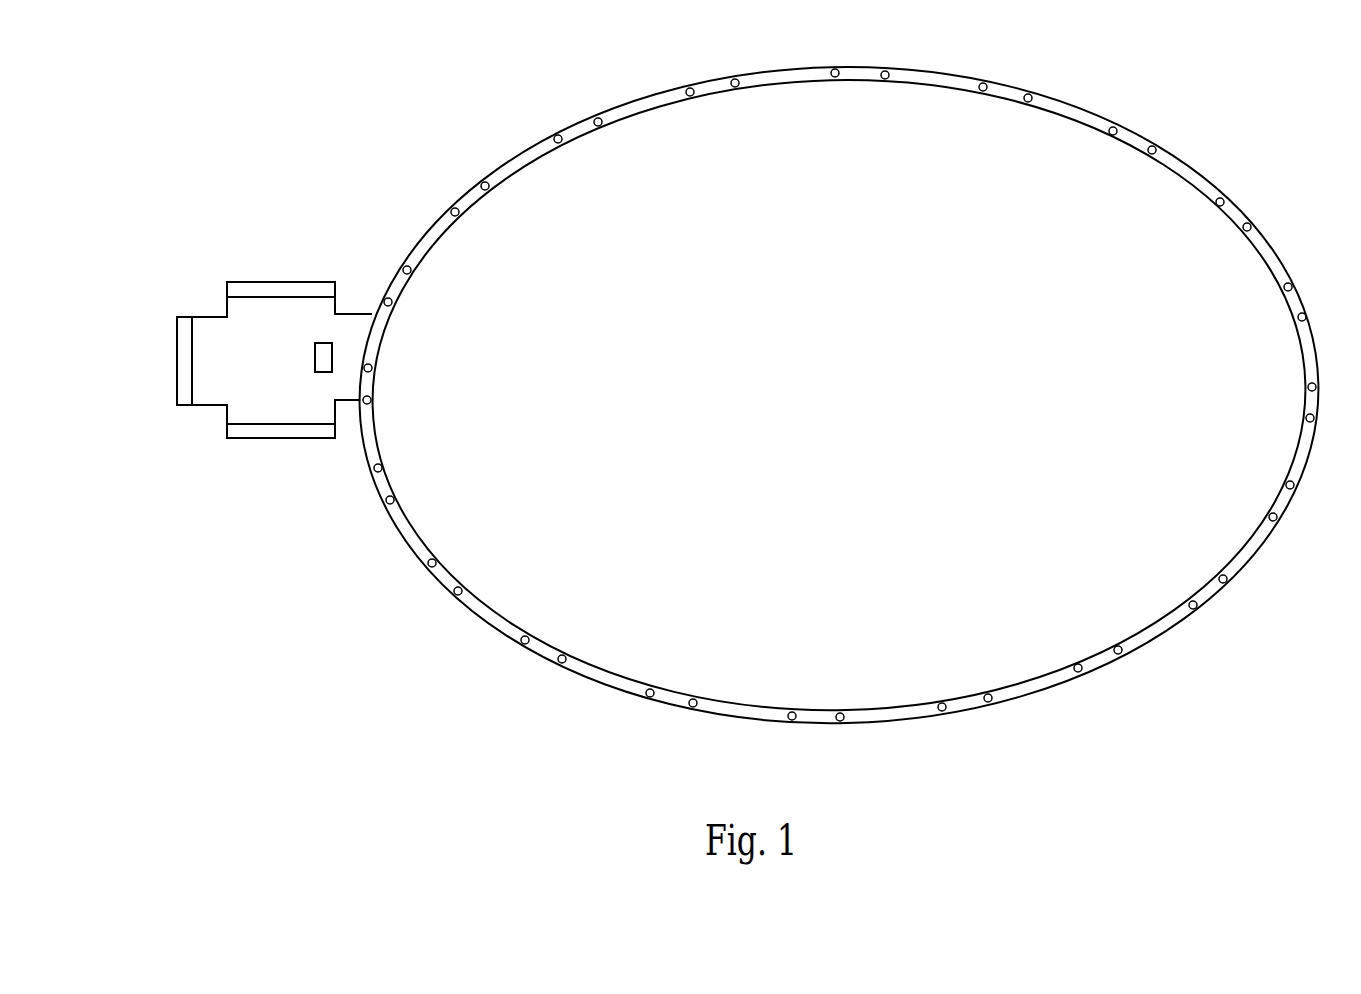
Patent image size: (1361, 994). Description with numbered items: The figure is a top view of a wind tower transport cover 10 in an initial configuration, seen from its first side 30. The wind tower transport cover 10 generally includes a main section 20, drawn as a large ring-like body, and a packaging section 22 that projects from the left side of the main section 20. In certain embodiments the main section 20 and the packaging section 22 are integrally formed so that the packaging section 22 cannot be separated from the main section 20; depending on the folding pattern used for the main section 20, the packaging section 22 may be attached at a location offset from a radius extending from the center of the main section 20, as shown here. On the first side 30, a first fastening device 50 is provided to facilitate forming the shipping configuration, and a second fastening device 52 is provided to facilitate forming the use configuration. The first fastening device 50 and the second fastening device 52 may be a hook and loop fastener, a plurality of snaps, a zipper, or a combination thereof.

The wind tower transport cover 10 is at (736, 471).
The main section 20 is at (510, 584).
The packaging section 22 is at (251, 354).
The first side 30 is at (1157, 550).
The first fastening device 50 is at (183, 318).
The second fastening device 52 is at (315, 345).